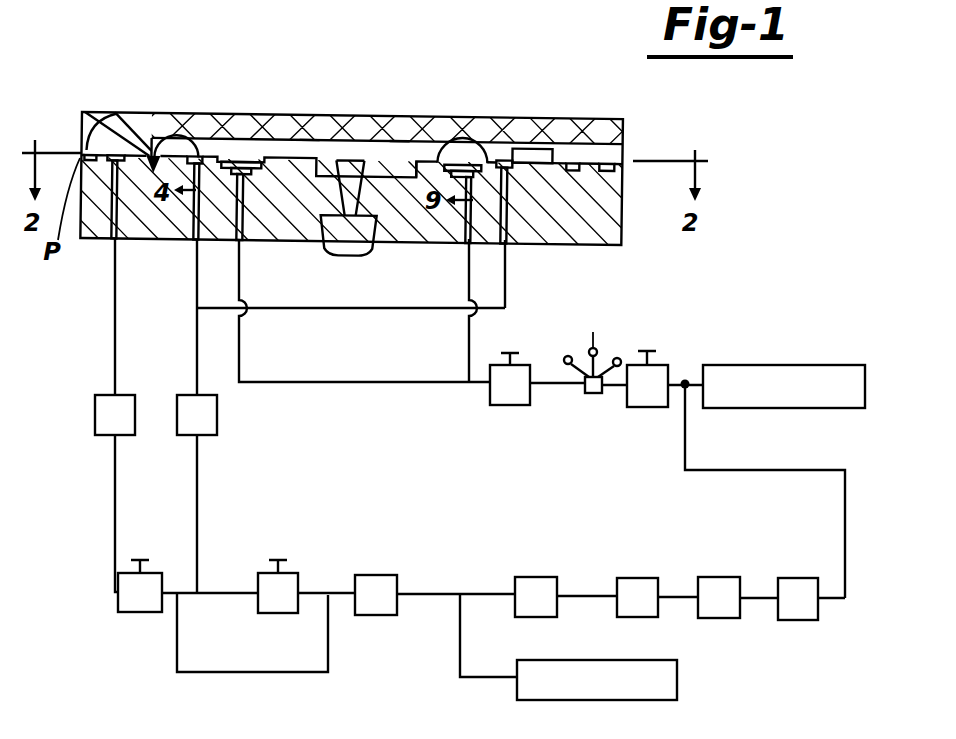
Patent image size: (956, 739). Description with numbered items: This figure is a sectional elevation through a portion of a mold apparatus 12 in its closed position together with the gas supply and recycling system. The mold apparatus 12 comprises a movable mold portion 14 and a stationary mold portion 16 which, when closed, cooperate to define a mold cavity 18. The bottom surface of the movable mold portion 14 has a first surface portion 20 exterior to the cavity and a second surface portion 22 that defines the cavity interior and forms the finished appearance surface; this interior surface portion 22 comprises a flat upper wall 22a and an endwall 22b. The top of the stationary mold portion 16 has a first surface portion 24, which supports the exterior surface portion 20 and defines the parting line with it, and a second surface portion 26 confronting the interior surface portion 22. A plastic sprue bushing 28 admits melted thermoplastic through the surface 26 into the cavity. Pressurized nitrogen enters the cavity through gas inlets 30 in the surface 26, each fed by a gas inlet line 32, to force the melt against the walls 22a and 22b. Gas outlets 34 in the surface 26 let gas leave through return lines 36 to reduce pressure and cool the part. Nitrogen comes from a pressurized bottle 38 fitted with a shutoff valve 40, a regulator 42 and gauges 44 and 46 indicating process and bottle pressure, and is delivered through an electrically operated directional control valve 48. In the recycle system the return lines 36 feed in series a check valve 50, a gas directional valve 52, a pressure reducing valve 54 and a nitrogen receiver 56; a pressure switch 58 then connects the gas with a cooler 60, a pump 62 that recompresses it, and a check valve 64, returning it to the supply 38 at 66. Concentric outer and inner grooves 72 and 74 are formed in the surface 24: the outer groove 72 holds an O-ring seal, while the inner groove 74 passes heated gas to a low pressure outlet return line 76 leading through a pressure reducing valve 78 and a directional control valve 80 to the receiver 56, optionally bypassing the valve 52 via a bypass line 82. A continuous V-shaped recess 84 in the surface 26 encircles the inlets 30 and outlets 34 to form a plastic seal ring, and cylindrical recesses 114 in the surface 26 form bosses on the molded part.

The mold apparatus 12 is at (666, 141).
The movable mold portion 14 is at (612, 152).
The stationary mold portion 16 is at (623, 225).
The mold cavity 18 is at (553, 145).
The first surface portion 20 is at (600, 152).
The second surface portion 22 is at (482, 148).
The flat upper wall 22a is at (452, 138).
The endwall 22b is at (155, 150).
The first surface portion 24 is at (151, 112).
The second surface portion 26 is at (346, 160).
The plastic sprue bushing 28 is at (321, 250).
The gas inlets 30 is at (243, 158).
The gas inlet line 32 is at (367, 378).
The gas outlets 34 is at (228, 152).
The return lines 36 is at (195, 320).
The pressurized bottle 38 is at (813, 365).
The shutoff valve 40 is at (650, 408).
The regulator 42 is at (597, 349).
The gauge 44 is at (570, 356).
The gauge 46 is at (614, 360).
The directional control valve 48 is at (508, 406).
The check valve 50 is at (180, 435).
The gas directional valve 52 is at (297, 572).
The pressure reducing valve 54 is at (394, 575).
The nitrogen receiver 56 is at (612, 700).
The pressure switch 58 is at (549, 577).
The cooler 60 is at (640, 578).
The pump 62 is at (726, 577).
The check valve 64 is at (805, 578).
The supply connection 66 is at (686, 380).
The outer groove 72 is at (82, 128).
The inner groove 74 is at (87, 111).
The low pressure outlet return line 76 is at (114, 272).
The pressure reducing valve 78 is at (95, 418).
The directional control valve 80 is at (118, 612).
The bypass line 82 is at (177, 655).
The V-shaped recess 84 is at (180, 140).
The cylindrical recesses 114 is at (303, 135).